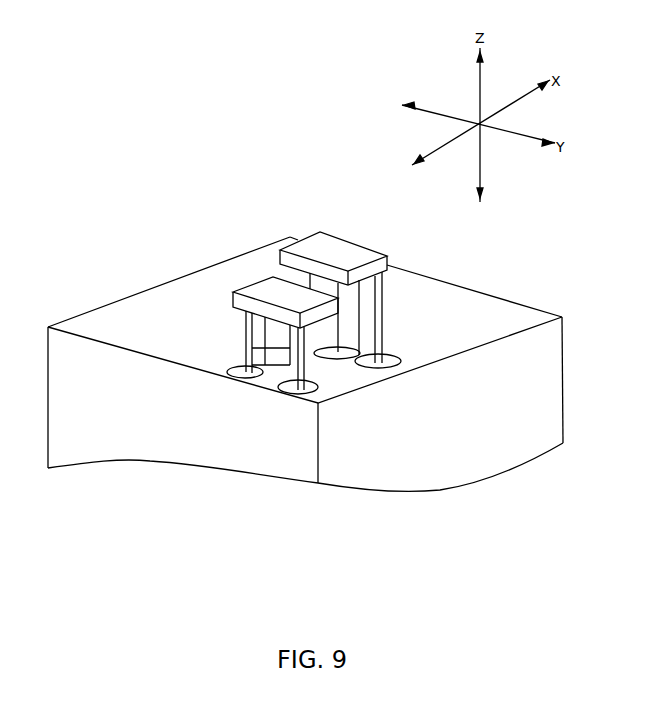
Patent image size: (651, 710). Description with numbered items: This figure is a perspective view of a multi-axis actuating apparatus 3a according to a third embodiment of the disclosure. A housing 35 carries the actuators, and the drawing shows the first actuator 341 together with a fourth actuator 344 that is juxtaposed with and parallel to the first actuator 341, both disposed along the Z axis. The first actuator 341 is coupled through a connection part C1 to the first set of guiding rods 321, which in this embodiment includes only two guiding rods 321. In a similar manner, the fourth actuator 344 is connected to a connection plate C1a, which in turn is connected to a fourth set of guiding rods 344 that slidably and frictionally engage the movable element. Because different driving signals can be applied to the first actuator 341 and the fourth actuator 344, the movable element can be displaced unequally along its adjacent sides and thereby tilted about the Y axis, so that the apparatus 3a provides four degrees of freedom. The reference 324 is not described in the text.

The multi-axis actuating apparatus 3a is at (184, 160).
The housing 35 is at (125, 322).
The connection part C1 is at (253, 287).
The connection plate C1a is at (343, 244).
The conductive pillar 324 is at (383, 293).
The fourth actuator 344 is at (347, 331).
The first actuator 341 is at (246, 316).
The first set of guiding rods 321 is at (246, 348).